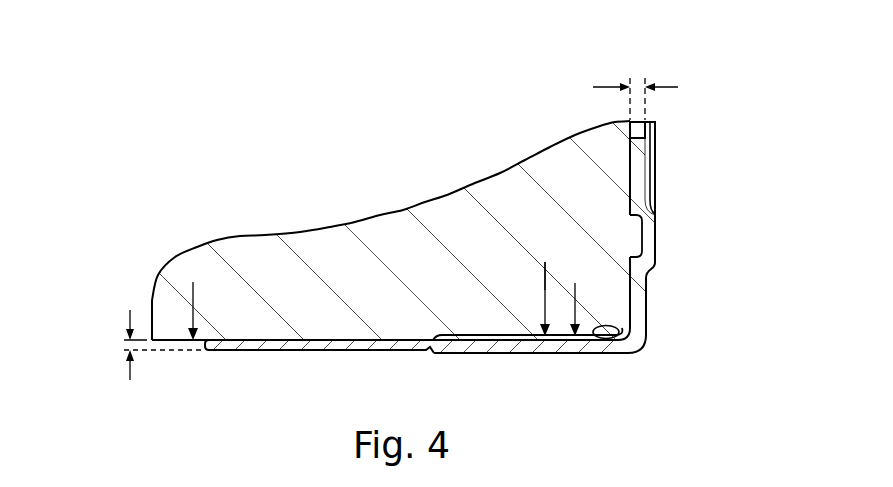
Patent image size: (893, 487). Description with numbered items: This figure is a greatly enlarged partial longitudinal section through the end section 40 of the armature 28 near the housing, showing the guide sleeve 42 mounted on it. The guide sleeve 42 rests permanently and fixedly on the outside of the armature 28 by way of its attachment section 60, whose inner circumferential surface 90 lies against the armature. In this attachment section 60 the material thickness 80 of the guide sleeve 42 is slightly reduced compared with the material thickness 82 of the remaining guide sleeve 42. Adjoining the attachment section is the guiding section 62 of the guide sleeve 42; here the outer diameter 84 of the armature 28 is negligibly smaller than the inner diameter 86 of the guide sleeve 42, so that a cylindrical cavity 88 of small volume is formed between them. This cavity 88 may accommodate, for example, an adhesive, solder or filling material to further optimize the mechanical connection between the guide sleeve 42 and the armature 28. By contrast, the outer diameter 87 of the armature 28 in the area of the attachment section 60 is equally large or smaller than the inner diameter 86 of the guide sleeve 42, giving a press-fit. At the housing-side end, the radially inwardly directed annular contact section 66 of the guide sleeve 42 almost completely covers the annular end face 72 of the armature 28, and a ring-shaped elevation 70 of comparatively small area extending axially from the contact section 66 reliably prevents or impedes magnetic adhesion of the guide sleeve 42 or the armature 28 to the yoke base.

The armature 28 is at (452, 217).
The end section 40 is at (339, 197).
The guide sleeve 42 is at (649, 356).
The attachment section 60 is at (205, 357).
The guiding section 62 is at (650, 357).
The contact section 66 is at (636, 152).
The ring-shaped elevation 70 is at (648, 232).
The annular end face 72 is at (646, 126).
The material thickness 80 is at (130, 310).
The material thickness 82 is at (668, 87).
The outer diameter 84 is at (576, 284).
The inner diameter 86 is at (544, 287).
The outer diameter 87 is at (193, 282).
The cylindrical cavity 88 is at (640, 337).
The inner circumferential surface 90 is at (331, 329).